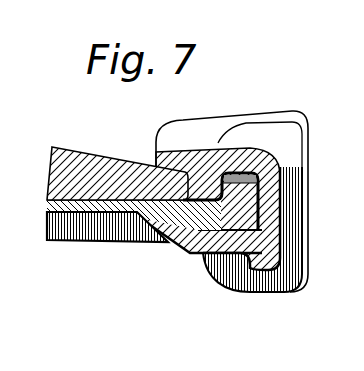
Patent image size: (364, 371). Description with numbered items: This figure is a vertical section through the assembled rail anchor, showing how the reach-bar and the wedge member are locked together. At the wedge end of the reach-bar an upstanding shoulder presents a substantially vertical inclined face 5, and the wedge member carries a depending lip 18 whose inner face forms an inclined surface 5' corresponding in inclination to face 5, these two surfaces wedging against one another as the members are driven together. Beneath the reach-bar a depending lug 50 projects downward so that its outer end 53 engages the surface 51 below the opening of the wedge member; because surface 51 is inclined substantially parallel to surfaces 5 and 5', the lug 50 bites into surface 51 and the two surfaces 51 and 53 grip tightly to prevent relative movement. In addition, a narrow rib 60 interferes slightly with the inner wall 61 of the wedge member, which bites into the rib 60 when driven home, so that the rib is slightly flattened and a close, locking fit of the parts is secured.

The inclined face of shoulder 5 is at (152, 164).
The inclined surface of lip 5' is at (283, 188).
The lip 18 is at (218, 145).
The depending lug 50 is at (167, 243).
The locking surface 51 is at (186, 252).
The outer end of lug 53 is at (222, 254).
The rib 60 is at (240, 285).
The inner wall 61 is at (248, 238).